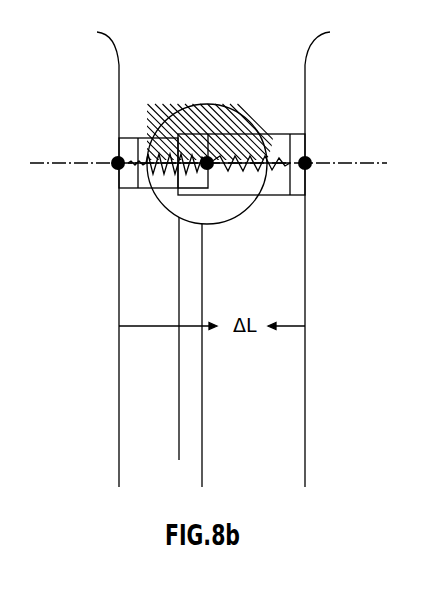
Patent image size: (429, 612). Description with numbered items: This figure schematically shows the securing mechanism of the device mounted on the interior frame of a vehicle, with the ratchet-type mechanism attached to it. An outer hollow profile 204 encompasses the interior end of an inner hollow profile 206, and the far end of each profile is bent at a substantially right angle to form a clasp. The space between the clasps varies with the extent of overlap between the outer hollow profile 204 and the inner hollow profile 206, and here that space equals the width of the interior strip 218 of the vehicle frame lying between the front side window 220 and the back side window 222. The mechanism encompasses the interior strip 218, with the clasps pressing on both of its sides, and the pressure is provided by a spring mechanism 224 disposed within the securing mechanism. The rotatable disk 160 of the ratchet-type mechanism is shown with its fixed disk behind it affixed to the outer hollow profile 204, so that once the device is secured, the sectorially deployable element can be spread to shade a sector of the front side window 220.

The back side window 222 is at (107, 55).
The front side window 220 is at (330, 62).
The interior strip 218 is at (273, 252).
The inner hollow profile 206 is at (130, 179).
The outer hollow profile 204 is at (283, 145).
The rotatable disk 160 is at (168, 211).
The spring mechanism 224 is at (282, 167).